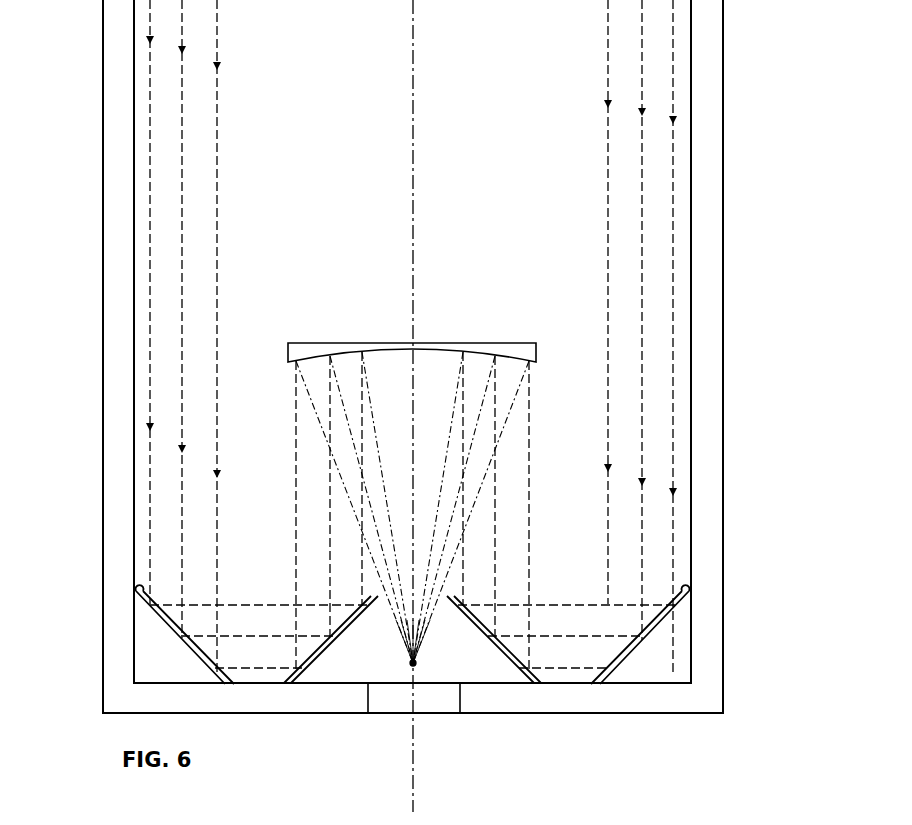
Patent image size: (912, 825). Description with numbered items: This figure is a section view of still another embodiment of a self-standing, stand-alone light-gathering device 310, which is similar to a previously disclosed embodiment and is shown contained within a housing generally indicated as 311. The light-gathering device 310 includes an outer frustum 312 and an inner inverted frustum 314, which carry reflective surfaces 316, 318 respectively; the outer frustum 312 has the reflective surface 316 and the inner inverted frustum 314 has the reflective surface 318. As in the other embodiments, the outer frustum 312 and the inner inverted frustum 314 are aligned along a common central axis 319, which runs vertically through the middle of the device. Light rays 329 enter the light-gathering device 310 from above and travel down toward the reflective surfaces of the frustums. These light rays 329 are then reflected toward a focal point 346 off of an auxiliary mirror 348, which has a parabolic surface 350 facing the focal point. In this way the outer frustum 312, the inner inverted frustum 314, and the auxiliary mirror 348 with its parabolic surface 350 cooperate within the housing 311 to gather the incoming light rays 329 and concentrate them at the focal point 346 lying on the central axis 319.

The light-gathering device 310 is at (411, 634).
The housing 311 is at (733, 413).
The outer frustum 312 is at (411, 632).
The inner inverted frustum 314 is at (415, 674).
The reflective surface 316 is at (137, 586).
The reflective surface 318 is at (329, 642).
The central axis 319 is at (414, 790).
The light rays 329 is at (217, 75).
The focal point 346 is at (416, 664).
The auxiliary mirror 348 is at (412, 325).
The parabolic surface 350 is at (372, 356).